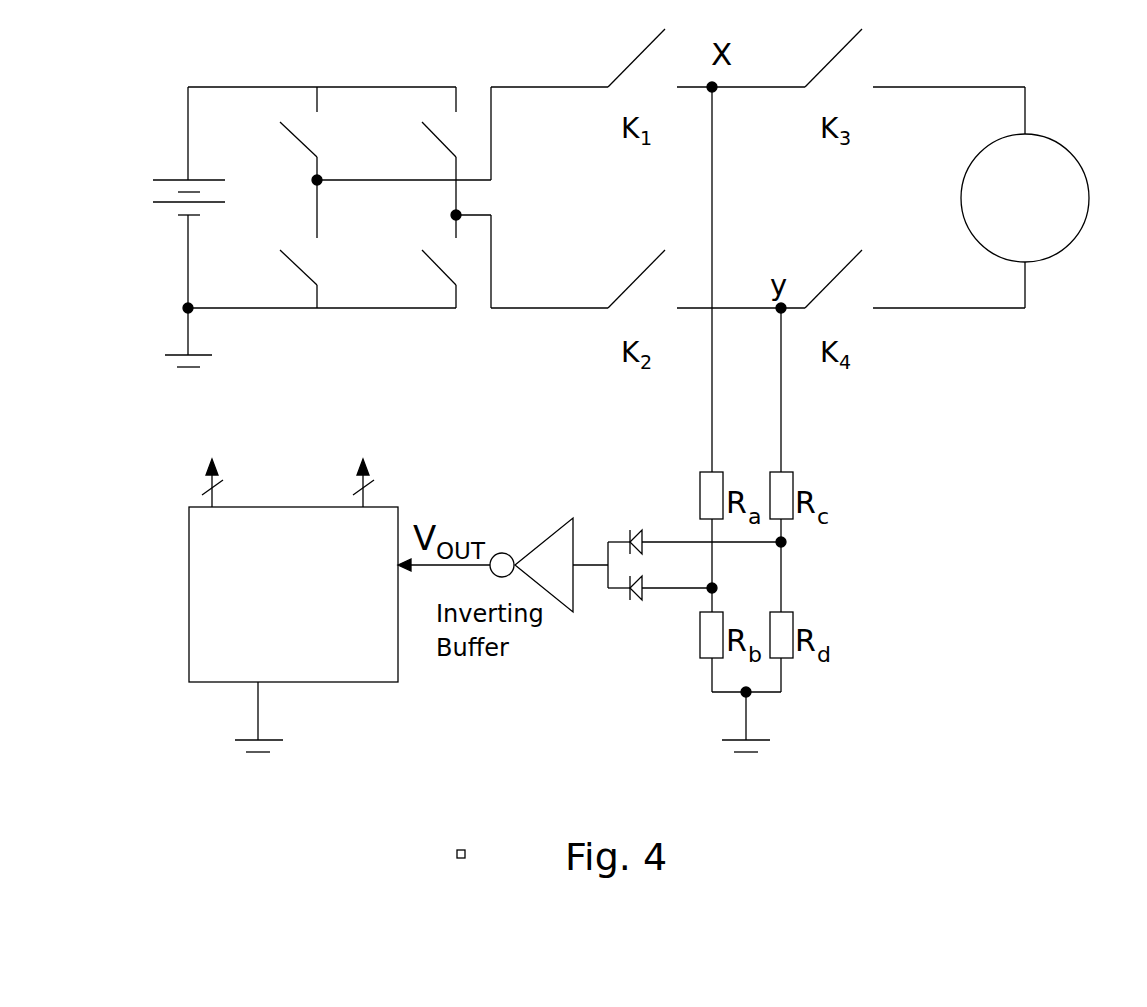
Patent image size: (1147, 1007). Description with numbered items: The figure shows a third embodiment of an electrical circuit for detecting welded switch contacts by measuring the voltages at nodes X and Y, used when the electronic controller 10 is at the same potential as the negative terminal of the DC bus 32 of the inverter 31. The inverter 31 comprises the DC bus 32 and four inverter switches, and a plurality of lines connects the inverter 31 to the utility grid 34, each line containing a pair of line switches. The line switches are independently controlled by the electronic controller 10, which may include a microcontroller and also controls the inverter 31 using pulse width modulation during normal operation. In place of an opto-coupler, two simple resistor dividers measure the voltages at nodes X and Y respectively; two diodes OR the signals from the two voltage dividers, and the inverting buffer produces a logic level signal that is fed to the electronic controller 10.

The inverter 31 is at (317, 70).
The DC bus 32 is at (169, 227).
The utility grid 34 is at (1002, 197).
The electronic controller 10 is at (290, 588).